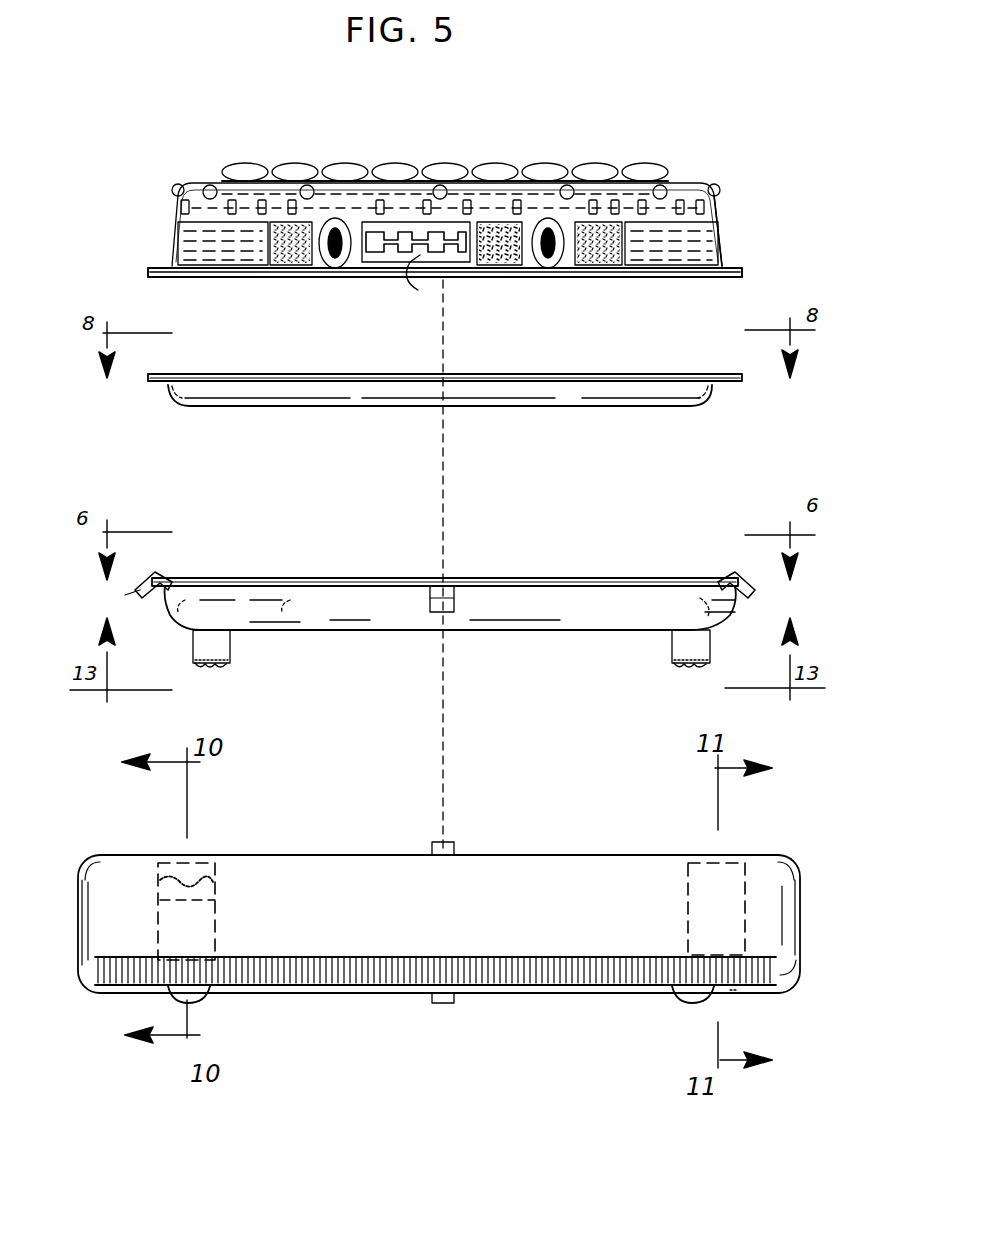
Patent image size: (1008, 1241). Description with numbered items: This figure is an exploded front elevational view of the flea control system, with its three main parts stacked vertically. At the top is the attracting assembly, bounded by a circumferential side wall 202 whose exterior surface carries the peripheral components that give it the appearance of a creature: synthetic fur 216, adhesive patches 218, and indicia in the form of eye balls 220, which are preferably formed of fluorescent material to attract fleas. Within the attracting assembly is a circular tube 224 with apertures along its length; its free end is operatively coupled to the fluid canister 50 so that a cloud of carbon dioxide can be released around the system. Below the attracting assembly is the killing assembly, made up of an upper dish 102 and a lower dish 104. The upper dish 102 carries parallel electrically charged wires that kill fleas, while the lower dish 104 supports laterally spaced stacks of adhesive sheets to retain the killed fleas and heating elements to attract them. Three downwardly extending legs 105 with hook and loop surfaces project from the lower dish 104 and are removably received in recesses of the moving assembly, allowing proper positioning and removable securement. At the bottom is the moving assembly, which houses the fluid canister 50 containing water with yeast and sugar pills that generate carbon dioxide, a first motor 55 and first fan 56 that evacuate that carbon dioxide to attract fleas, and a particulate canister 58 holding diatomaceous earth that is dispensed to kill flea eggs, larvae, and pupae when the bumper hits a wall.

The fluid canister 50 is at (208, 950).
The first motor 55 is at (144, 885).
The first fan 56 is at (210, 862).
The particulate canister 58 is at (740, 934).
The upper dish 102 is at (544, 376).
The lower dish 104 is at (552, 582).
The downwardly extending legs 105 is at (232, 644).
The circumferential side wall 202 is at (173, 230).
The synthetic fur 216 is at (602, 238).
The adhesive patches 218 is at (718, 242).
The eye balls 220 is at (340, 252).
The tube 224 is at (363, 196).